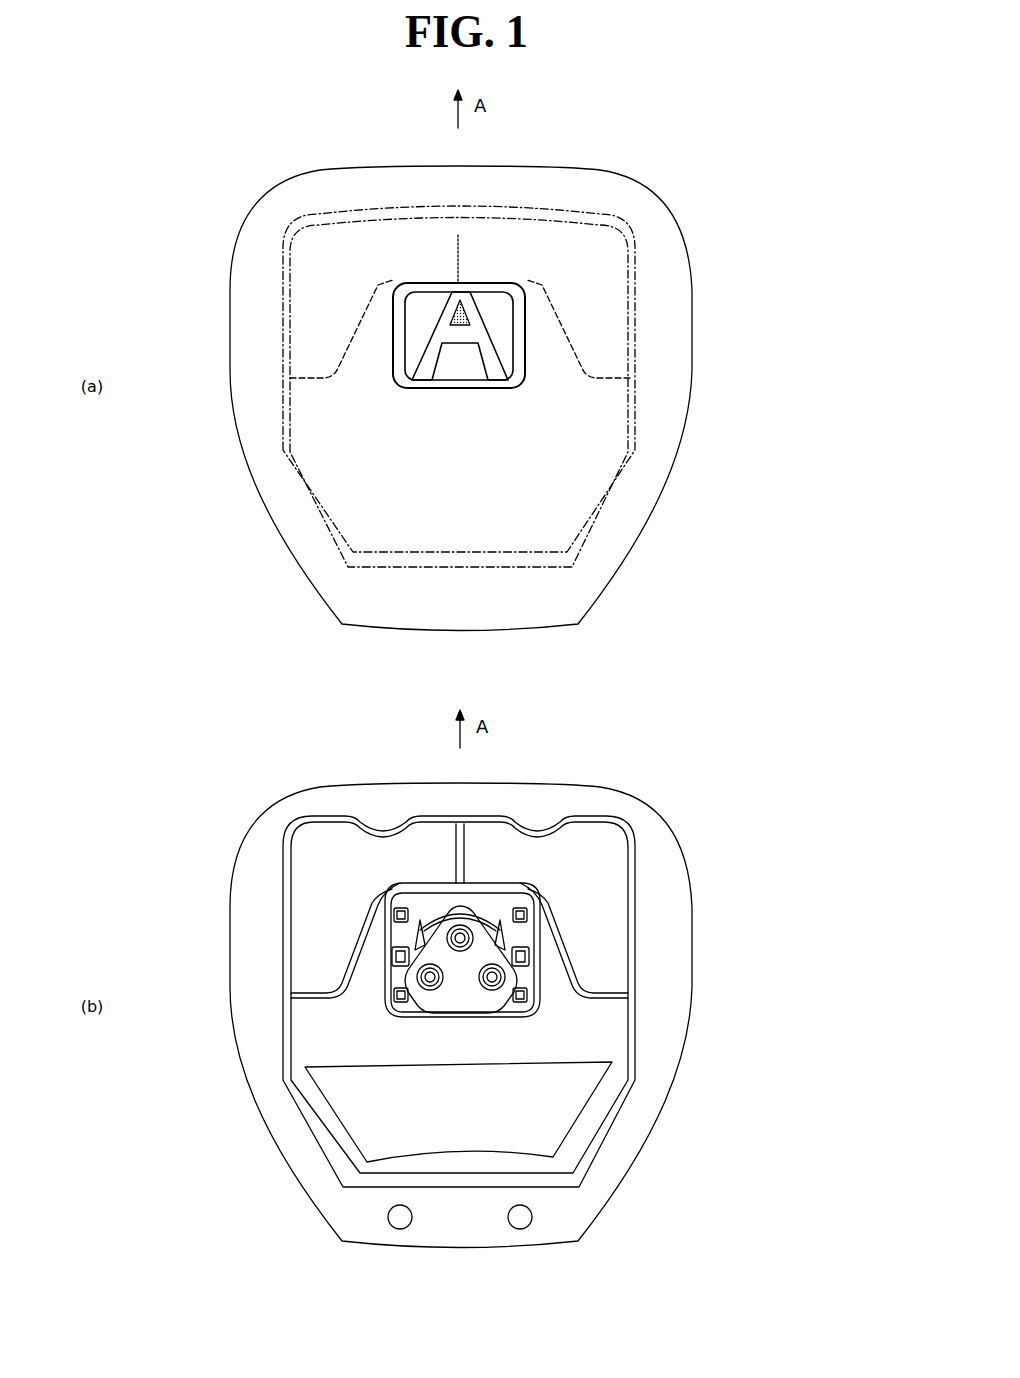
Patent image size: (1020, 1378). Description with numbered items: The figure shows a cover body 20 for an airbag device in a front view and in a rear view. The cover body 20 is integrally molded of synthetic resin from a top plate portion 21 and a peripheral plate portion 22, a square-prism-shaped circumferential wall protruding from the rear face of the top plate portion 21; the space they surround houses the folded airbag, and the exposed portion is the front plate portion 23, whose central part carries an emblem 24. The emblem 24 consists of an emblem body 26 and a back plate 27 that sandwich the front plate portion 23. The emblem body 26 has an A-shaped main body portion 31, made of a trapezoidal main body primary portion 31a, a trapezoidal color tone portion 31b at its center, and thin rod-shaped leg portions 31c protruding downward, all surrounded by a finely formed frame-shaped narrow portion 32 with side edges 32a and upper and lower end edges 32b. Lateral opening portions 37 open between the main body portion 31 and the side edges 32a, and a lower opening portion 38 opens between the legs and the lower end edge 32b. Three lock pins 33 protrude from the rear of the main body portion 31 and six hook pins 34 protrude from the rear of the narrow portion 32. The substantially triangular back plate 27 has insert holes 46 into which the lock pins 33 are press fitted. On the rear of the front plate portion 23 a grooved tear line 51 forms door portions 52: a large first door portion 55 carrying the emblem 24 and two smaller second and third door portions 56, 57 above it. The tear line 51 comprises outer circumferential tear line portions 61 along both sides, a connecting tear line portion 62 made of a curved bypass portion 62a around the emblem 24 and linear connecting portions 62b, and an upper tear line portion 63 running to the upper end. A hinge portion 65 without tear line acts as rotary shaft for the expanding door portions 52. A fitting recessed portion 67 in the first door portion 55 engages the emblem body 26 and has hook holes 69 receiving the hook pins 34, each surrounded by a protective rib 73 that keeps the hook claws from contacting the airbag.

The cover body 20 is at (641, 137).
The top plate portion 21 is at (660, 211).
The peripheral plate portion 22 is at (622, 517).
The front plate portion 23 is at (605, 402).
The emblem 24 is at (497, 284).
The emblem body 26 is at (520, 290).
The back plate 27 is at (495, 955).
The main body portion 31 is at (440, 392).
The main body primary portion 31a is at (413, 325).
The color tone portion 31b is at (467, 300).
The leg portion 31c is at (417, 362).
The narrow portion 32 is at (527, 332).
The side edge 32a is at (392, 333).
The end edge 32b is at (432, 305).
The lock pin 33 is at (472, 915).
The hook pin 34 is at (400, 910).
The lateral opening portion 37 is at (405, 372).
The lower opening portion 38 is at (470, 366).
The insert hole 46 is at (455, 930).
The tear line 51 is at (527, 318).
The door portion 52 is at (556, 1140).
The first door portion 55 is at (477, 1110).
The second door portion 56 is at (600, 858).
The third door portion 57 is at (322, 858).
The outer circumferential tear line portion 61 is at (287, 427).
The connecting tear line portion 62 is at (350, 357).
The bypass portion 62a is at (373, 292).
The connecting portion 62b is at (330, 378).
The upper tear line portion 63 is at (457, 235).
The hinge portion 65 is at (360, 850).
The fitting recessed portion 67 is at (397, 322).
The hook hole 69 is at (420, 922).
The rib 73 is at (404, 916).